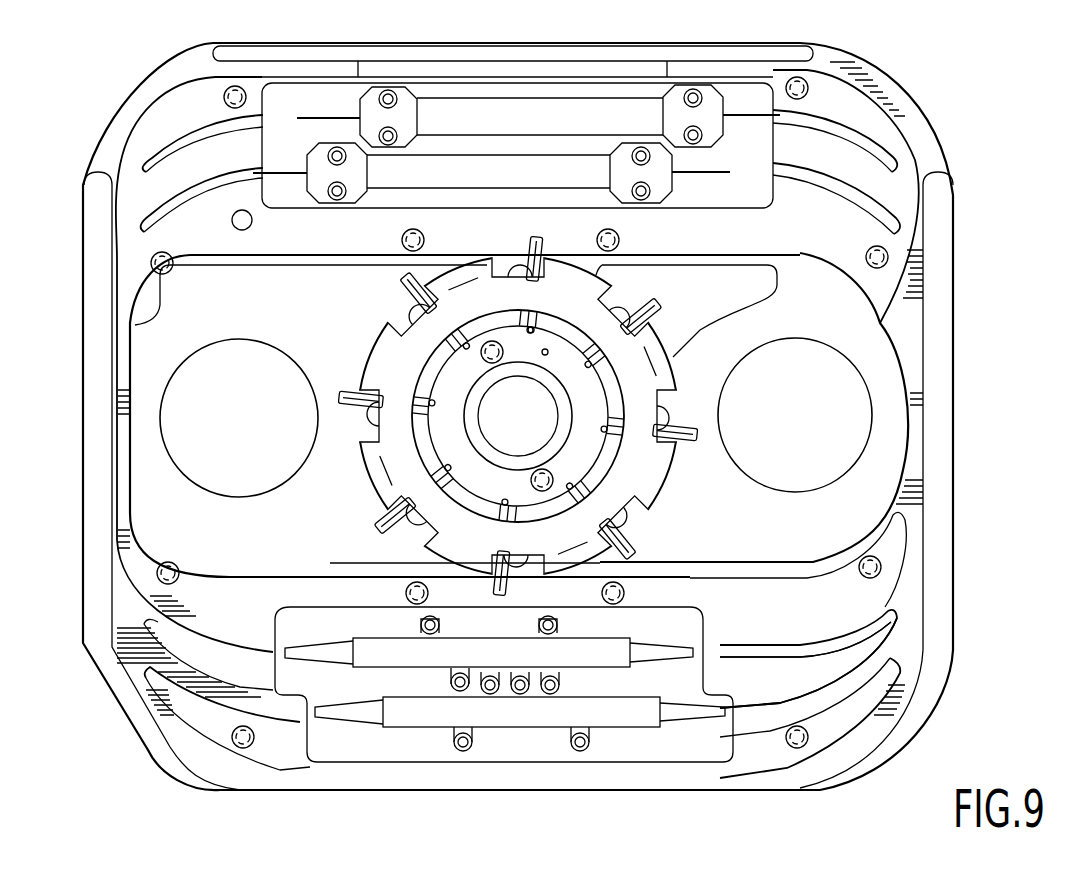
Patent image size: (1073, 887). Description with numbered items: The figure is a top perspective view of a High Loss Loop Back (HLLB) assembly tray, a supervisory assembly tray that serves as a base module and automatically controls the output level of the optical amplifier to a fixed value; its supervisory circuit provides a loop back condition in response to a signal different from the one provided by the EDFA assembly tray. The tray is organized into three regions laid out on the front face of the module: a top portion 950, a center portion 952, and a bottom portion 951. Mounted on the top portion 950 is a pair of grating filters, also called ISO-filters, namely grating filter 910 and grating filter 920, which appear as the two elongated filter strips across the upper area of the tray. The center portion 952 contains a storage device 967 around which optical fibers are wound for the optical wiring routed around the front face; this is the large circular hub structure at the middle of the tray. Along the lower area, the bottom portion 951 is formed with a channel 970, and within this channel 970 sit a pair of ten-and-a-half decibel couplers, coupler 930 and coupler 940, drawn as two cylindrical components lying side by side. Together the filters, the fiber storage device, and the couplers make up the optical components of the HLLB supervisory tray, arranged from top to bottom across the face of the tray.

The top portion 950 is at (410, 34).
The grating filter (ISO-filter) 910 is at (557, 105).
The grating filter (ISO-filter) 920 is at (585, 163).
The storage device 967 is at (777, 297).
The center portion 952 is at (356, 508).
The channel 970 is at (410, 735).
The 10.5 dB coupler 930 is at (688, 728).
The 10.5 dB coupler 940 is at (693, 658).
The bottom portion 951 is at (882, 632).